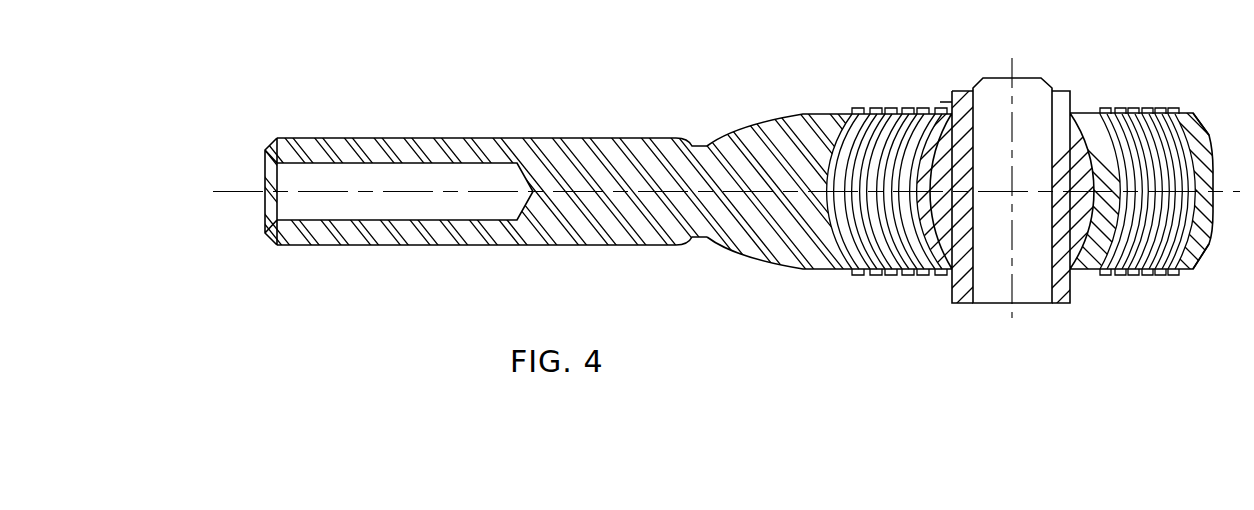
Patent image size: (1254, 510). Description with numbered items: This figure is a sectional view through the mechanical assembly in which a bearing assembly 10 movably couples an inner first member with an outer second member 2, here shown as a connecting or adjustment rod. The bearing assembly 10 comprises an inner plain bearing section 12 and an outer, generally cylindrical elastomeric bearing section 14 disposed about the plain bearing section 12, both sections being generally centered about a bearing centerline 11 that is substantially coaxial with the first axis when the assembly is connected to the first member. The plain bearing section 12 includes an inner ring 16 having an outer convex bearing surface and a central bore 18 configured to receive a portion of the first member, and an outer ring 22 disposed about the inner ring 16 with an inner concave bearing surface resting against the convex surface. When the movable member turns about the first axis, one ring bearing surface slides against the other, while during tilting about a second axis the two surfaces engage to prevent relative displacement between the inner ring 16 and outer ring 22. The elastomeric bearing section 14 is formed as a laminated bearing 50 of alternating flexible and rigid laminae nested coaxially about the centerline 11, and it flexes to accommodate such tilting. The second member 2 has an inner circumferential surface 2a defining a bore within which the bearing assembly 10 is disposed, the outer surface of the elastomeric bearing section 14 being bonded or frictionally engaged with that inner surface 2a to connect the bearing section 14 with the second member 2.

The second member 2 is at (605, 115).
The inner circumferential surface 2a is at (1188, 270).
The bearing assembly 10 is at (930, 182).
The bearing centerline 11 is at (1014, 66).
The inner plain bearing section 12 is at (937, 279).
The elastomeric bearing section 14 is at (1141, 105).
The inner ring 16 is at (1062, 300).
The central bore 18 is at (975, 288).
The outer ring 22 is at (1098, 238).
The laminated bearing 50 is at (884, 110).